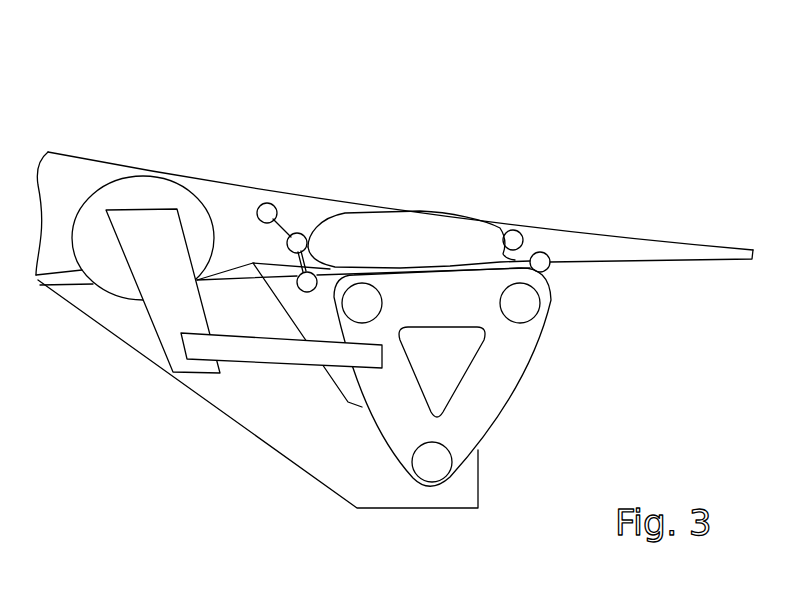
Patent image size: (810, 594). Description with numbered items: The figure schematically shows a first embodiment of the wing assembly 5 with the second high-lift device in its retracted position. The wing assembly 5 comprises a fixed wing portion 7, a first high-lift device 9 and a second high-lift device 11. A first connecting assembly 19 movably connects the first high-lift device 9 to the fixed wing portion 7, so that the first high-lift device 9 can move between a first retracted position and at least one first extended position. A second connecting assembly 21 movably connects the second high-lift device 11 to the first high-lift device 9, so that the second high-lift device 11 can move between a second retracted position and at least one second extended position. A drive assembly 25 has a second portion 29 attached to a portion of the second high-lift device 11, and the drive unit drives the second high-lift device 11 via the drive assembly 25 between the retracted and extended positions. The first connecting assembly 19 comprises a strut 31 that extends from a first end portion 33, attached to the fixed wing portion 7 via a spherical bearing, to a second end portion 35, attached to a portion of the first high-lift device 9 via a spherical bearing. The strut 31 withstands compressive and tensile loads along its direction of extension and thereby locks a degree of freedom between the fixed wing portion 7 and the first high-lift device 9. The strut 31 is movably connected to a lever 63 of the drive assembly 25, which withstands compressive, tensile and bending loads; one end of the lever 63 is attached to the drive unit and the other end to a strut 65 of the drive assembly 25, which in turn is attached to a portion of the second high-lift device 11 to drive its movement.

The wing assembly 5 is at (394, 301).
The fixed wing portion 7 is at (70, 170).
The first high-lift device 9 is at (468, 233).
The second high-lift device 11 is at (600, 247).
The first connecting assembly 19 is at (282, 491).
The second connecting assembly 21 is at (510, 244).
The drive assembly 25 is at (418, 254).
The second portion 29 is at (548, 271).
The strut 31 is at (297, 233).
The first end portion 33 is at (267, 208).
The second end portion 35 is at (304, 260).
The lever 63 is at (310, 262).
The strut 65 is at (452, 278).